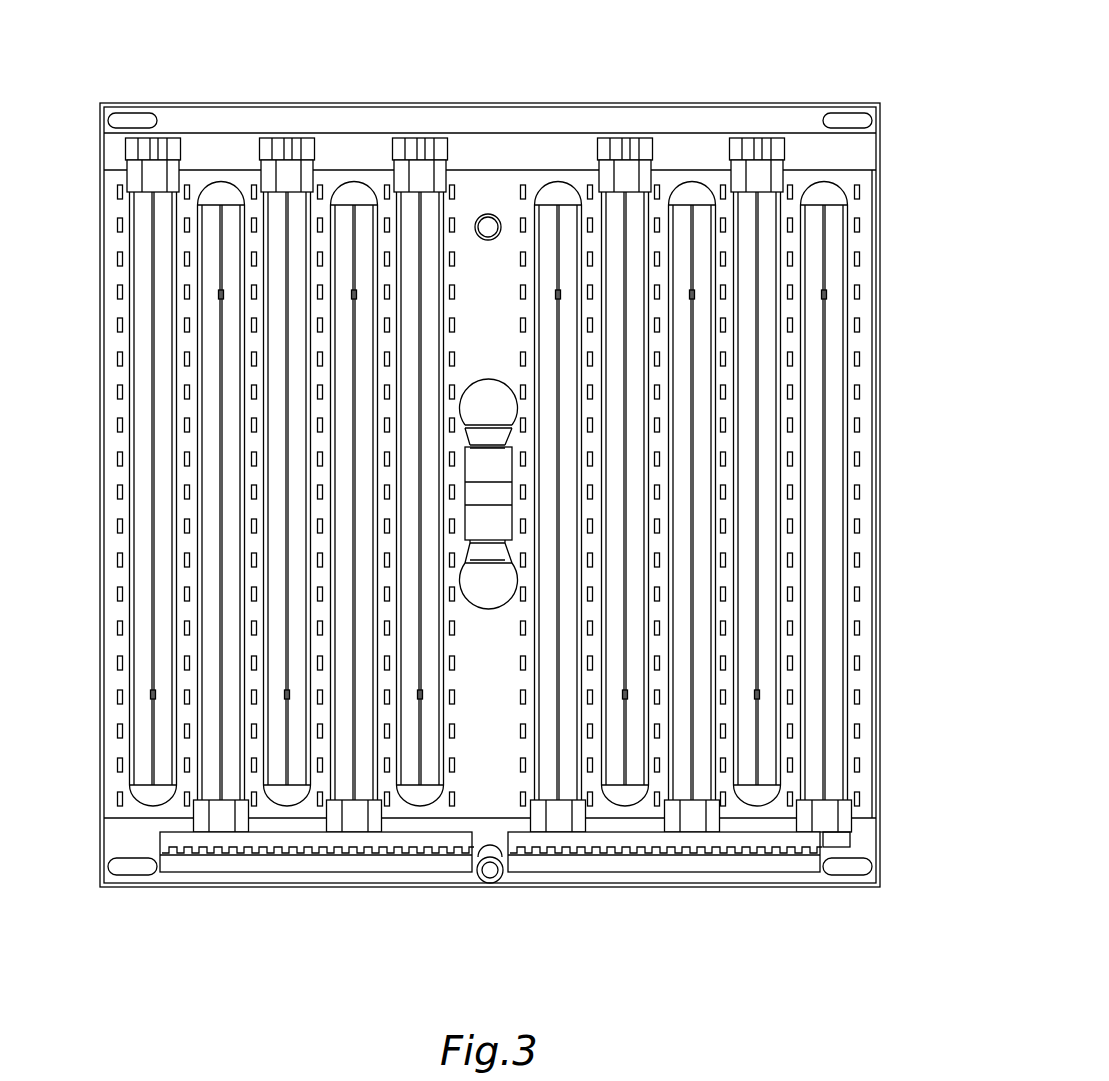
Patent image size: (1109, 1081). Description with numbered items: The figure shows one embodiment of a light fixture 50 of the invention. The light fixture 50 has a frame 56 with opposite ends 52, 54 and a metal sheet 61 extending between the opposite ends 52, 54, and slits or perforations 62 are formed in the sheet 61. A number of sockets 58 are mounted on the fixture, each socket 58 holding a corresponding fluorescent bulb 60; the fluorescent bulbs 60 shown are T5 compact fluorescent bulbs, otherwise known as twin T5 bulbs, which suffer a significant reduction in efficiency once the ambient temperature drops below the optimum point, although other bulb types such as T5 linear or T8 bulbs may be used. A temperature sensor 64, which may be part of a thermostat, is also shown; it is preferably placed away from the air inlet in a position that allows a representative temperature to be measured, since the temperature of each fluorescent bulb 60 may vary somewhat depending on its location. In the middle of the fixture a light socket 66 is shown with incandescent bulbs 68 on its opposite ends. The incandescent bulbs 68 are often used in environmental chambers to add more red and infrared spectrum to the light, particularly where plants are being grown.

The light fixture 50 is at (711, 45).
The opposite end 52 is at (853, 103).
The opposite end 54 is at (178, 865).
The frame 56 is at (858, 250).
The socket 58 is at (153, 145).
The fluorescent bulb 60 is at (222, 192).
The metal sheet 61 is at (862, 680).
The slits or perforations 62 is at (877, 343).
The temperature sensor 64 is at (487, 214).
The light socket 66 is at (470, 472).
The incandescent bulb 68 is at (480, 393).